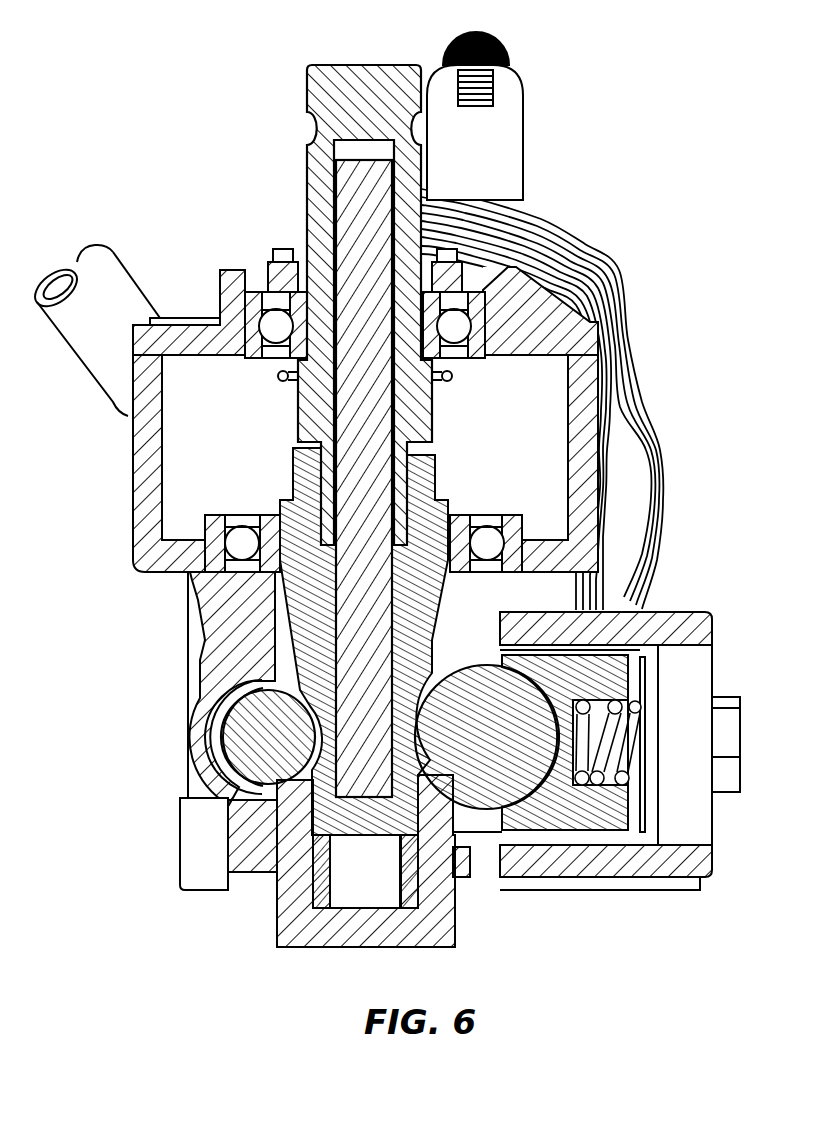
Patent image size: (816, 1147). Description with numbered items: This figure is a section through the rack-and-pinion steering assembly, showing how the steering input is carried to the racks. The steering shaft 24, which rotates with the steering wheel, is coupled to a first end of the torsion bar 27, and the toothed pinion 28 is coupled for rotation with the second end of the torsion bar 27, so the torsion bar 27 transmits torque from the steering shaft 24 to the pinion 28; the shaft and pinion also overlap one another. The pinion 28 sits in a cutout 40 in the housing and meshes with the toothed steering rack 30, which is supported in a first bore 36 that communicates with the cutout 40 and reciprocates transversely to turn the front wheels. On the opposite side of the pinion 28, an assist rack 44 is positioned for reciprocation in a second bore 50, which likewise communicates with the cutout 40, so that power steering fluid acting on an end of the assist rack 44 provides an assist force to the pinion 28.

The steering shaft 24 is at (318, 167).
The torsion bar 27 is at (357, 227).
The toothed pinion 28 is at (308, 627).
The toothed steering rack 30 is at (456, 782).
The first bore 36 is at (487, 830).
The cutout 40 is at (290, 800).
The assist rack 44 is at (248, 722).
The second bore 50 is at (215, 765).